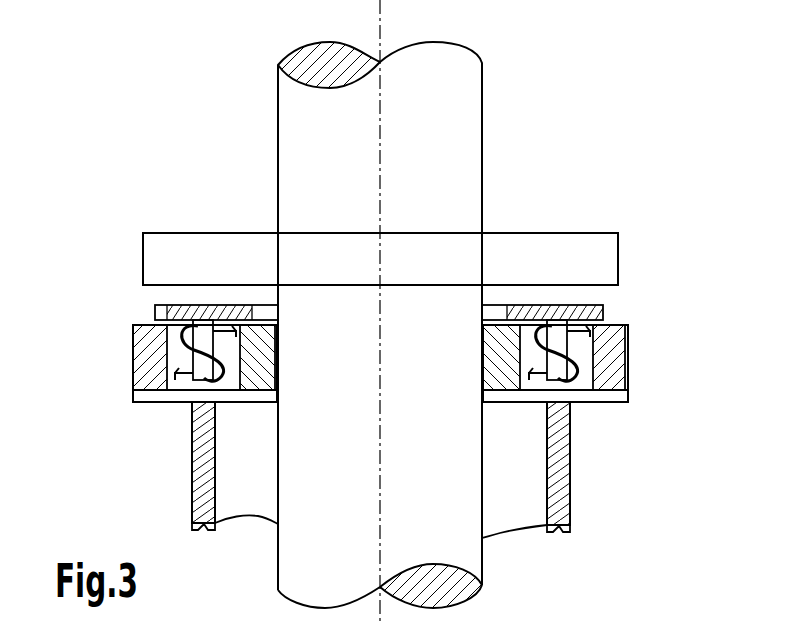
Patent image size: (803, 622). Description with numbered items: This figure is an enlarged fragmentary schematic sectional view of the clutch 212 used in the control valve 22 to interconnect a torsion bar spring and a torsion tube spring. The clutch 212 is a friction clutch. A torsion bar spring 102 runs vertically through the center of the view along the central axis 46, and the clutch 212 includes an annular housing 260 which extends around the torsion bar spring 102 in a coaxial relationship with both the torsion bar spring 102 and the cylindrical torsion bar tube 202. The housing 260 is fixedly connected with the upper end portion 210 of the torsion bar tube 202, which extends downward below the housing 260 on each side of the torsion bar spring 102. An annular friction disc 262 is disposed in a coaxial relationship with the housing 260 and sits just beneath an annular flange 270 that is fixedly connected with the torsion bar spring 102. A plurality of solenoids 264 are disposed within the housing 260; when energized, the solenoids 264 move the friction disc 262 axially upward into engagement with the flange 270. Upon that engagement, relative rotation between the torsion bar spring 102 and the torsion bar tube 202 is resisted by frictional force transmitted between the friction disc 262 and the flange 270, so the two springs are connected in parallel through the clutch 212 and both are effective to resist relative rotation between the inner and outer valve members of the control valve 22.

The control valve 22 is at (565, 132).
The central axis 46 is at (383, 18).
The torsion bar spring 102 is at (450, 108).
The torsion bar tube 202 is at (570, 457).
The upper end portion 210 is at (190, 455).
The clutch 212 is at (628, 231).
The annular housing 260 is at (628, 357).
The annular friction disc 262 is at (173, 312).
The solenoids 264 is at (192, 358).
The annular flange 270 is at (225, 250).